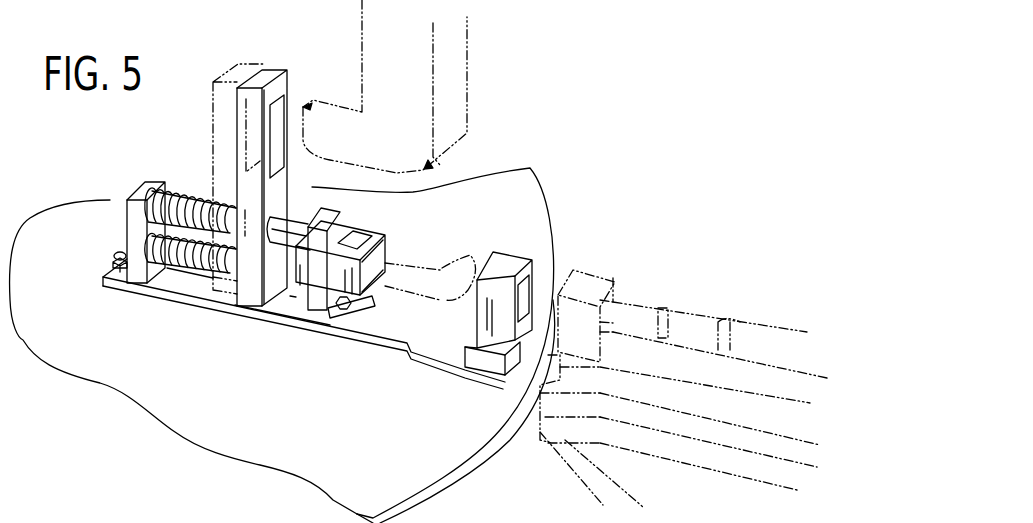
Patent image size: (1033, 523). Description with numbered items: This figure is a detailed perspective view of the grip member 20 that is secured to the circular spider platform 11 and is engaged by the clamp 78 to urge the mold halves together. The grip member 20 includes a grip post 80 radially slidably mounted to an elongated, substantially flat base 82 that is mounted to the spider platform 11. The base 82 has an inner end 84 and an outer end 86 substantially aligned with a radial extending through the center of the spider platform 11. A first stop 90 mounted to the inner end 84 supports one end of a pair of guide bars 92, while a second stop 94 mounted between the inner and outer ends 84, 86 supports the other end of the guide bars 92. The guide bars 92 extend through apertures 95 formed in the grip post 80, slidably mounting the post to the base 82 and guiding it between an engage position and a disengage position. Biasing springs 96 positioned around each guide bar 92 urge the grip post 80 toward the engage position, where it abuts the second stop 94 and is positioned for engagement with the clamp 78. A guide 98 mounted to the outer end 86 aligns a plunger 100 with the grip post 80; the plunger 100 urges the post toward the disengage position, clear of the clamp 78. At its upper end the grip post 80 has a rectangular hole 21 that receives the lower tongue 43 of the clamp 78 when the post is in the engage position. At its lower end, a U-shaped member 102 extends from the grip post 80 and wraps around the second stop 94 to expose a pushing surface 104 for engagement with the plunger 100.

The spider platform 11 is at (390, 497).
The grip member 20 is at (225, 52).
The rectangular hole 21 is at (283, 101).
The lower tongue 43 is at (380, 146).
The clamp 78 is at (467, 34).
The grip post 80 is at (287, 100).
The base 82 is at (303, 322).
The inner end 84 is at (107, 283).
The outer end 86 is at (493, 380).
The first stop 90 is at (127, 216).
The guide bars 92 is at (297, 222).
The second stop 94 is at (342, 226).
The apertures 95 is at (273, 208).
The biasing springs 96 is at (182, 192).
The guide 98 is at (517, 260).
The plunger 100 is at (462, 268).
The U-shaped member 102 is at (380, 240).
The pushing surface 104 is at (385, 255).